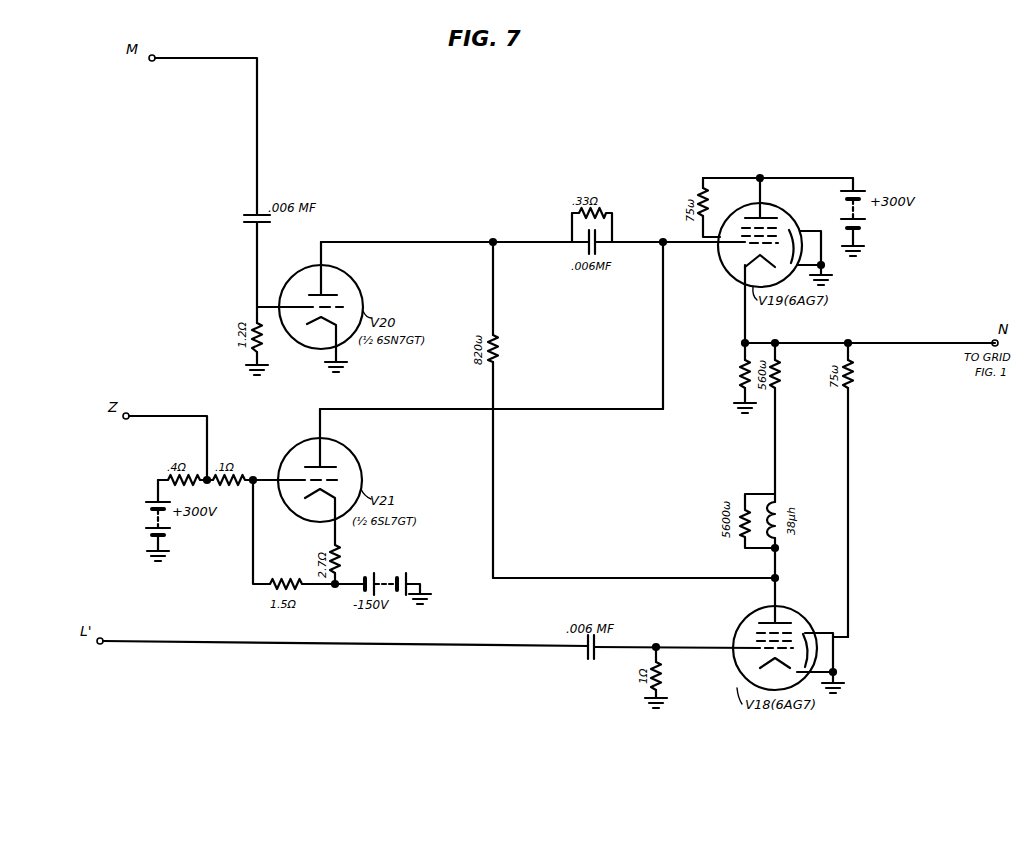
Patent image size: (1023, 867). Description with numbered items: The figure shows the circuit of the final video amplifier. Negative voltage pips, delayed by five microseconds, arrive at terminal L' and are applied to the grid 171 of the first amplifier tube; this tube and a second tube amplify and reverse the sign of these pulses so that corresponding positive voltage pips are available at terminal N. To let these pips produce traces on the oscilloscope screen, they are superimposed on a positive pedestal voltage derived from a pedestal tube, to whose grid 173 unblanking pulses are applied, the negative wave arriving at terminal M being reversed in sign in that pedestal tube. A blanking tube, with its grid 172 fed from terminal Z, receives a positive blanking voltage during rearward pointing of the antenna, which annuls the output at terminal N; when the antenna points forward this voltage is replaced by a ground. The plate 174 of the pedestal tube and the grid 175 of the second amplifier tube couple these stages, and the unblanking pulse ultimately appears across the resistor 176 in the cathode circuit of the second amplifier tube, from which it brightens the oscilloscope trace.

The grid 171 is at (760, 648).
The grid 172 is at (306, 480).
The grid 173 is at (313, 305).
The plate of tube V20 174 is at (330, 293).
The control grid of tube V19 175 is at (748, 247).
The resistor 176 is at (745, 365).